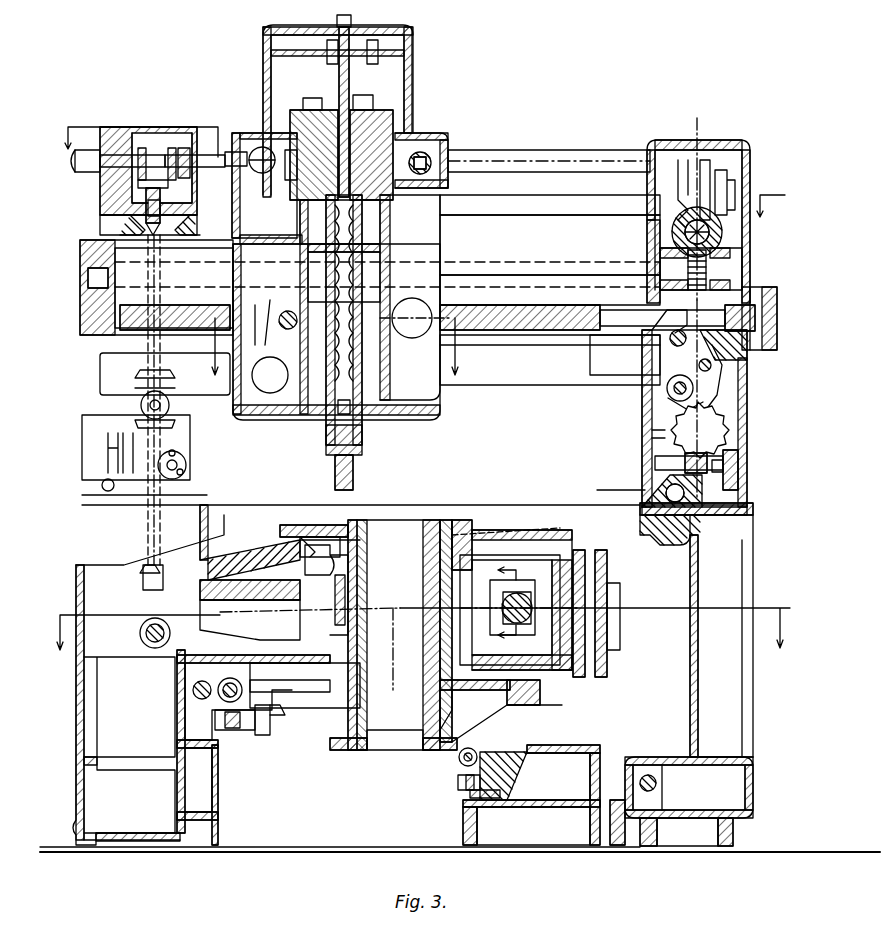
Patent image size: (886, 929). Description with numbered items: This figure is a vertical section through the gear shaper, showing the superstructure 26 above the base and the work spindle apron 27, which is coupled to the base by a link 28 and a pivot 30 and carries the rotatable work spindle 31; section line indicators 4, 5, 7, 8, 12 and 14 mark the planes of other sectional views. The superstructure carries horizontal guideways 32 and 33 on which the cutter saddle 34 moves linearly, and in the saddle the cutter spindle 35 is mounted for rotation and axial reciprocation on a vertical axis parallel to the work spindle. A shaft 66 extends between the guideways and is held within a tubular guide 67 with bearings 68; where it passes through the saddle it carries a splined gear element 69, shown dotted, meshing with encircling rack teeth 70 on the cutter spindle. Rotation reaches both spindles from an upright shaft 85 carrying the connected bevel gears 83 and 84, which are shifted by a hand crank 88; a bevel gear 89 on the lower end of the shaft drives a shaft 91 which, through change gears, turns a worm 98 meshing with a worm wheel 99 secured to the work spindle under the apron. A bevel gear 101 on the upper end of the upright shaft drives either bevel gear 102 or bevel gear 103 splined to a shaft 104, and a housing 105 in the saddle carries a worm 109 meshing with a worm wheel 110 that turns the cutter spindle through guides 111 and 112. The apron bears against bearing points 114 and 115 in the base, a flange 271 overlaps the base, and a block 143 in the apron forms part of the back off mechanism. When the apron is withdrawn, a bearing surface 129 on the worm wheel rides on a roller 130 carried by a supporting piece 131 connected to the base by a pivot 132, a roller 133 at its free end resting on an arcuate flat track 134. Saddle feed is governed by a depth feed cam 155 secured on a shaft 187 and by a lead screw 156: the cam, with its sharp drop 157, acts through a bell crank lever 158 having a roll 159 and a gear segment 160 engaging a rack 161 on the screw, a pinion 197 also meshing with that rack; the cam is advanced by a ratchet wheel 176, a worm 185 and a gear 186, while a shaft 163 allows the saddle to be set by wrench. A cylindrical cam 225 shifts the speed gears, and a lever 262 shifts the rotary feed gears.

The section line 4- 4 is at (335, 350).
The section line 5- 5 is at (419, 161).
The section line 7- 7 is at (415, 629).
The section line 8- 8 is at (507, 606).
The shift lever 12 is at (166, 546).
The section line 14-14 / wall 14 is at (712, 515).
The superstructure 26 is at (600, 350).
The work spindle apron 27 is at (455, 535).
The link 28 is at (630, 608).
The pivot 30 is at (590, 560).
The work spindle 31 is at (362, 528).
The horizontal guideway 32 is at (492, 225).
The horizontal guideway 33 is at (518, 382).
The cutter saddle 34 is at (415, 400).
The cutter spindle 35 is at (332, 430).
The shaft 66 is at (530, 268).
The tubular guide 67 is at (715, 235).
The bearings 68 is at (660, 245).
The gear element 69 is at (326, 272).
The rack teeth 70 is at (362, 272).
The bevel gear 83 is at (135, 425).
The bevel gear 84 is at (145, 378).
The upright shaft 85 is at (145, 528).
The hand crank 88 is at (182, 462).
The bevel gear 89 is at (168, 612).
The shaft 91 is at (170, 633).
The worm 98 is at (222, 665).
The worm wheel 99 is at (252, 725).
The bevel gear 101 is at (158, 180).
The bevel gear 102 is at (136, 150).
The bevel gear 103 is at (180, 150).
The shaft 104 is at (212, 157).
The housing 105 is at (420, 145).
The worm 109 is at (428, 160).
The worm wheel 110 is at (285, 170).
The guide 111 is at (368, 128).
The guide 112 is at (330, 115).
The bearing point 114 is at (368, 565).
The bearing point 115 is at (372, 680).
The bearing surface 129 is at (450, 750).
The roller 130 is at (478, 750).
The supporting piece 131 is at (525, 752).
The pivot 132 is at (595, 770).
The roller 133 is at (466, 788).
The arcuate flat track 134 is at (468, 812).
The block 143 is at (545, 570).
The depth feed cam 155 is at (665, 430).
The lead screw 156 is at (570, 320).
The sharp drop 157 is at (720, 415).
The bell crank lever 158 is at (710, 380).
The roll 159 is at (668, 398).
The gear segment 160 is at (745, 352).
The rack 161 is at (740, 322).
The shaft 163 is at (282, 325).
The ratchet wheel 176 is at (745, 478).
The worm 185 is at (668, 478).
The gear 186 is at (725, 437).
The shaft 187 is at (665, 450).
The pinion 197 is at (676, 340).
The cylindrical cam 225 is at (668, 165).
The lever 262 is at (105, 488).
The flange 271 is at (330, 535).